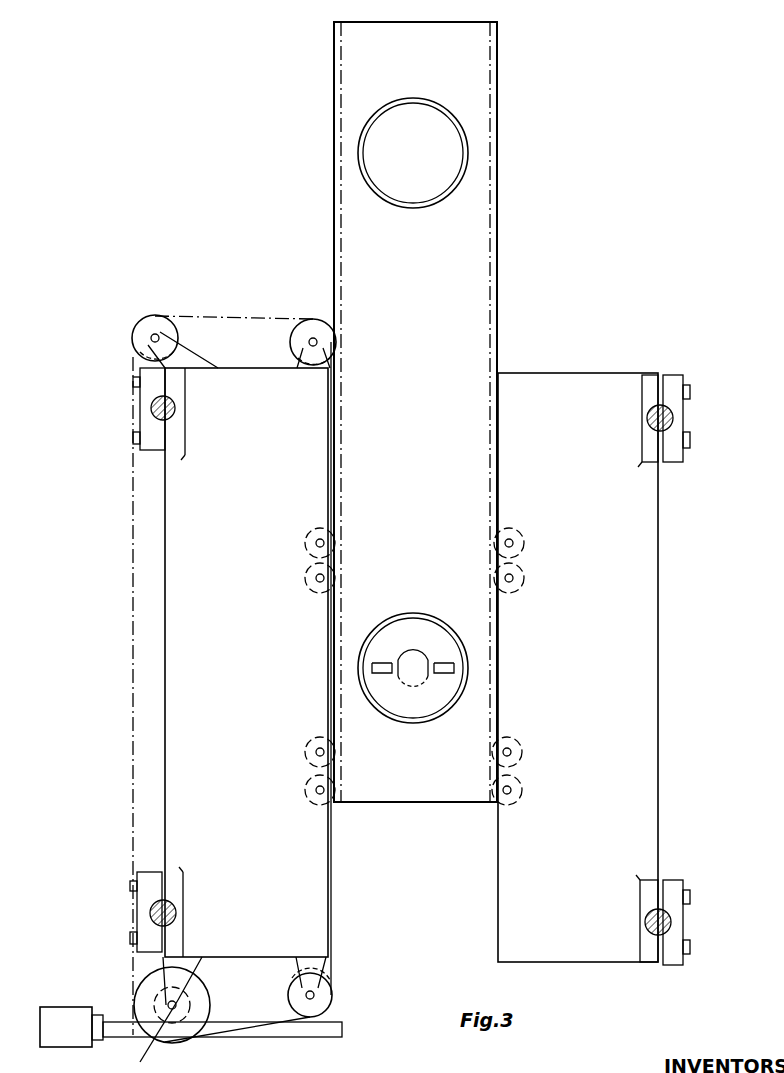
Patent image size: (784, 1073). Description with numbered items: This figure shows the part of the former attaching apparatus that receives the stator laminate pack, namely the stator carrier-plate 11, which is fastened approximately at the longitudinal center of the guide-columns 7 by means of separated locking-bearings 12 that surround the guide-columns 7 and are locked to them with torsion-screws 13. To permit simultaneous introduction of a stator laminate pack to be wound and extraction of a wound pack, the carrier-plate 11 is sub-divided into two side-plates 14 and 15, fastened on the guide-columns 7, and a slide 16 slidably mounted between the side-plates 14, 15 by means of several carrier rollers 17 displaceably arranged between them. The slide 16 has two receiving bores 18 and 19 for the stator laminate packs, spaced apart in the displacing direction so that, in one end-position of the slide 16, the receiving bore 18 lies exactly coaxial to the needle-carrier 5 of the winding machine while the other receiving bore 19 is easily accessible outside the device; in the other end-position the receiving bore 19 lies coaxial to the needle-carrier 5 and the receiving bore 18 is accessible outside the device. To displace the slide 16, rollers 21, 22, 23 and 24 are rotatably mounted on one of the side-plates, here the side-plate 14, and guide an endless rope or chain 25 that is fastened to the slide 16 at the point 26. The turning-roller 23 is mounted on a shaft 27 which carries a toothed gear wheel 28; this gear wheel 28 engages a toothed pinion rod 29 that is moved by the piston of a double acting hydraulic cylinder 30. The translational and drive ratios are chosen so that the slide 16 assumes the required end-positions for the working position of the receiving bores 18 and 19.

The needle-carrier 5 is at (416, 652).
The guide-columns 7 is at (177, 408).
The carrier-plate 11 is at (519, 338).
The locking-bearings 12 is at (673, 385).
The torsion-screws 13 is at (690, 386).
The side-plate 14 is at (180, 663).
The side-plate 15 is at (645, 704).
The slide 16 is at (478, 258).
The carrier rollers 17 is at (304, 565).
The receiving bore 18 is at (408, 707).
The receiving bore 19 is at (430, 113).
The roller 21 is at (307, 326).
The roller 22 is at (150, 326).
The turning-roller 23 is at (150, 980).
The roller 24 is at (322, 995).
The endless rope or chain 25 is at (133, 698).
The fastening point 26 is at (335, 367).
The shaft 27 is at (149, 1033).
The toothed gear wheel 28 is at (154, 1003).
The toothed pinion rod 29 is at (224, 1028).
The double acting hydraulic cylinder 30 is at (65, 1037).